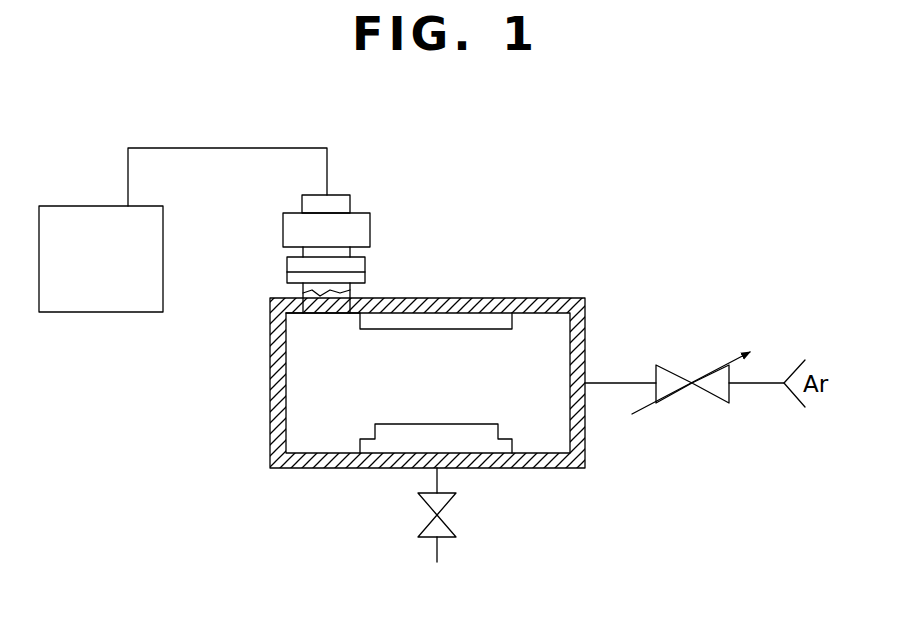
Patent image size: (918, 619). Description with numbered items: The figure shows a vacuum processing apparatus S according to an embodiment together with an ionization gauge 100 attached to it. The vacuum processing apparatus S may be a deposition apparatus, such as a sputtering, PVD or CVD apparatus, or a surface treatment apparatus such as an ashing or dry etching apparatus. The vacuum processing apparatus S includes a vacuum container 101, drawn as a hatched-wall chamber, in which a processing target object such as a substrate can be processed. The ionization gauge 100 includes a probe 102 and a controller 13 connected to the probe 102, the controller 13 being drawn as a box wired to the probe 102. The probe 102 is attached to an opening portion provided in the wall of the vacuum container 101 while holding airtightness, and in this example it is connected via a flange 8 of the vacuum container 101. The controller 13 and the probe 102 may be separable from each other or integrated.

The ionization gauge 100 is at (414, 201).
The vacuum container 101 is at (585, 322).
The probe 102 is at (338, 195).
The flange 8 is at (365, 272).
The controller 13 is at (155, 222).
The vacuum processing apparatus S is at (562, 275).